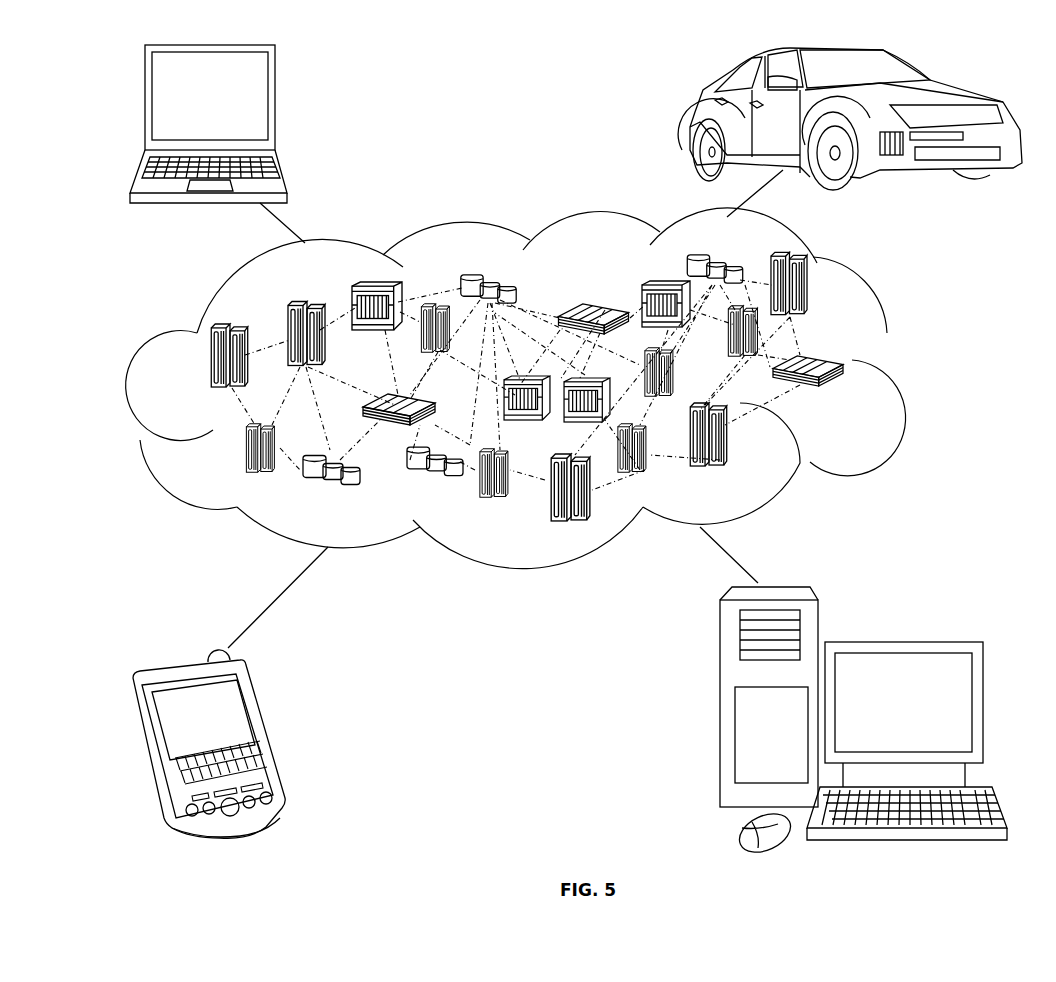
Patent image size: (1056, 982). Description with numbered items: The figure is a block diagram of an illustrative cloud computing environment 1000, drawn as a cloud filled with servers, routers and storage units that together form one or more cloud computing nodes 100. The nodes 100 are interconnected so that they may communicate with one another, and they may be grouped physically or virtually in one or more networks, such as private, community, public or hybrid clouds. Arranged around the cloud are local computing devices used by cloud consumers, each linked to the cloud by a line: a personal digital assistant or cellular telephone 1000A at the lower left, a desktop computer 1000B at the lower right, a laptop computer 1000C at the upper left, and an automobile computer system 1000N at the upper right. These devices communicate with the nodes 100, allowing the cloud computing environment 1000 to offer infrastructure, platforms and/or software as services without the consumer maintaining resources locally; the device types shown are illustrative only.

The cloud computing environment 1000 is at (905, 366).
The cloud computing nodes 100 is at (852, 395).
The personal digital assistant (PDA) or cellular telephone 1000A is at (265, 733).
The desktop computer 1000B is at (902, 641).
The laptop computer 1000C is at (280, 104).
The automobile computer system 1000N is at (690, 119).